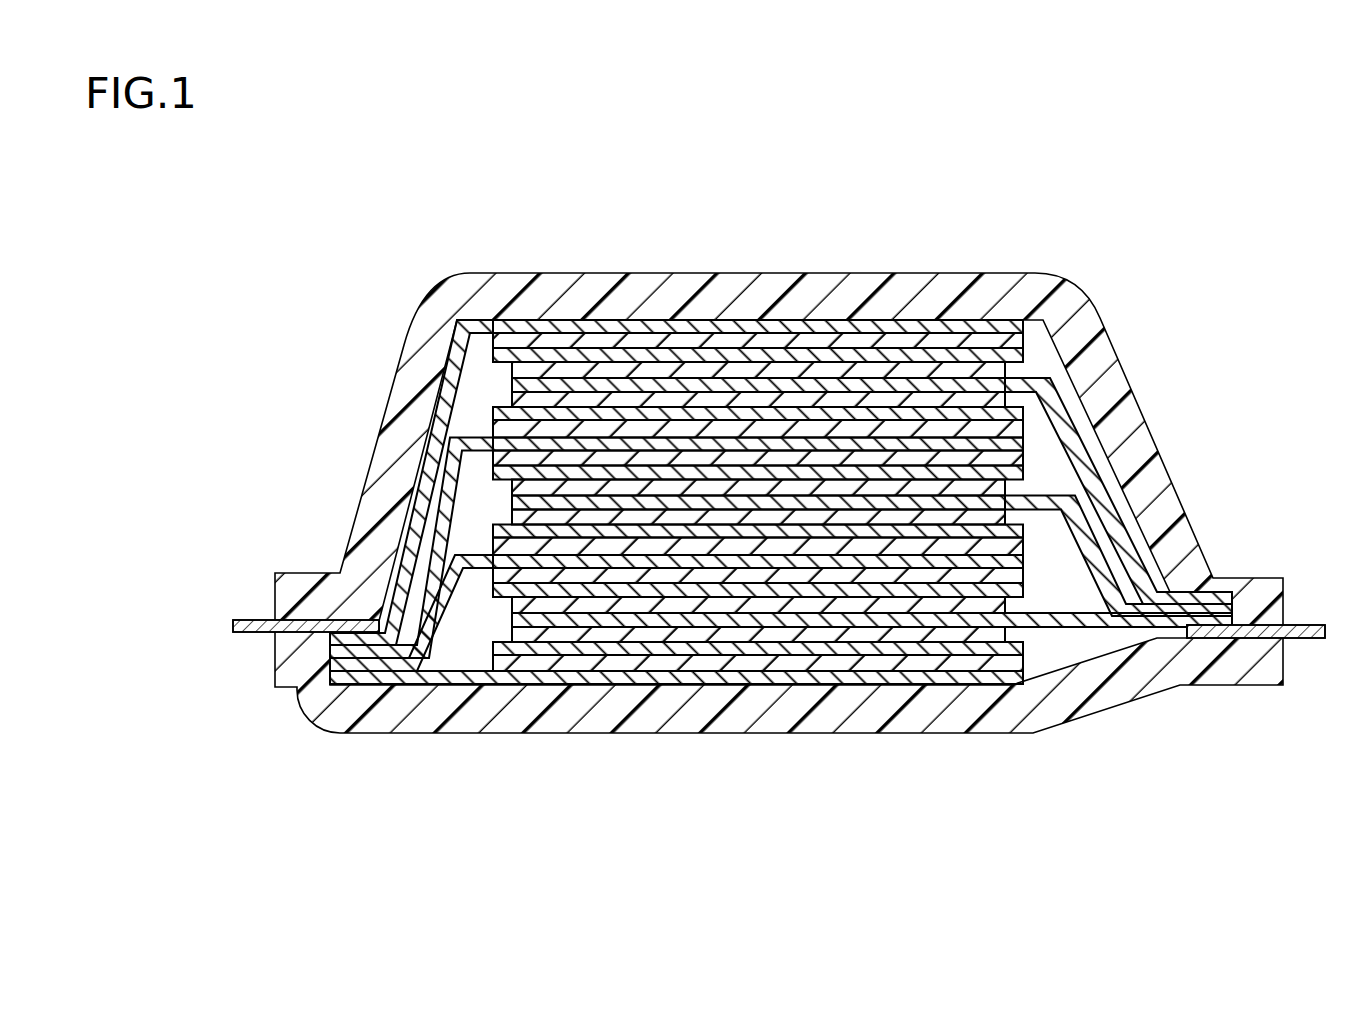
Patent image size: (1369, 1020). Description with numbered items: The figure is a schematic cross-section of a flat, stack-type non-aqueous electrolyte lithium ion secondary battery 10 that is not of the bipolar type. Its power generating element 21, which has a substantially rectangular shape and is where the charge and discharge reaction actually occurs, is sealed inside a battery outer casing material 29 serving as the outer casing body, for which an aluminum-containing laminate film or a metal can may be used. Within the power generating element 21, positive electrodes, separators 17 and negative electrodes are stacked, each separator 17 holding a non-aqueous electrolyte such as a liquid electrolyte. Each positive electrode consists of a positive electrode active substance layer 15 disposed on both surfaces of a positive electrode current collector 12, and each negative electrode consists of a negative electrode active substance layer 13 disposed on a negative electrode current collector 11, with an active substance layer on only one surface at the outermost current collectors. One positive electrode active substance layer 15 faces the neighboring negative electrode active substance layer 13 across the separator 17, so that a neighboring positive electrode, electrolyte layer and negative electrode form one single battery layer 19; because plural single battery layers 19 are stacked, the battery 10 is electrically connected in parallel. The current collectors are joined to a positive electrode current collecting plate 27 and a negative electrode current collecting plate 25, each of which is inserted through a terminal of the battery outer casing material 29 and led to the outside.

The stack type battery 10 is at (294, 138).
The negative electrode current collector 11 is at (863, 318).
The positive electrode current collector 12 is at (665, 400).
The negative electrode active substance layer 13 is at (812, 385).
The positive electrode active substance layer 15 is at (713, 372).
The separator 17 is at (765, 350).
The single battery layer 19 is at (642, 190).
The power generating element 21 is at (1033, 565).
The negative electrode current collecting plate (tab) 25 is at (253, 618).
The positive electrode current collecting plate (tab) 27 is at (1310, 625).
The battery outer casing material 29 is at (1268, 578).